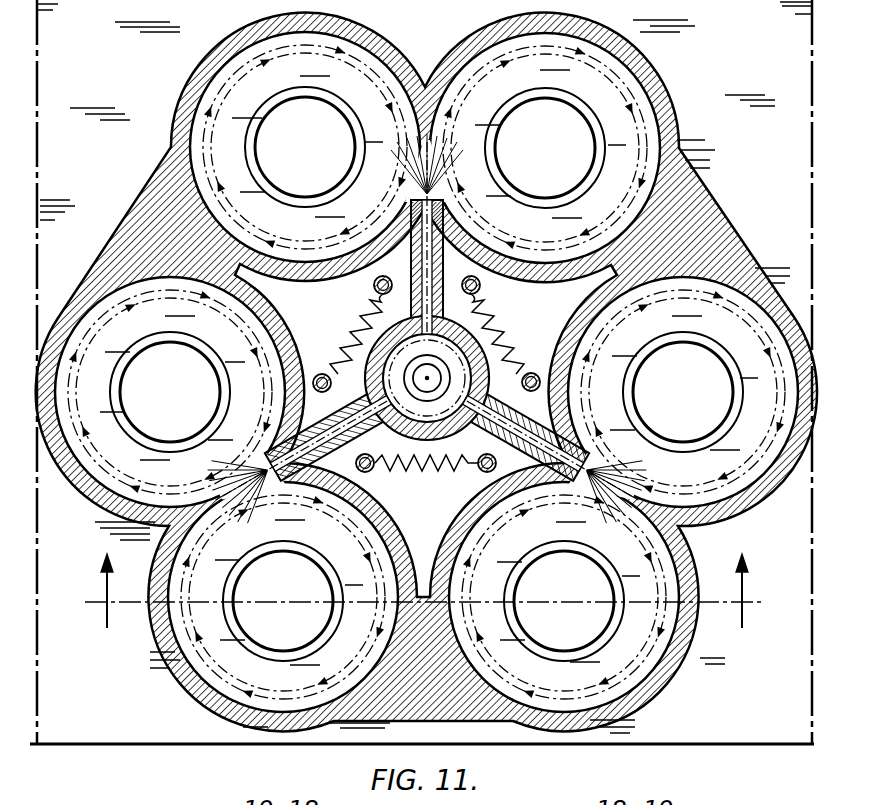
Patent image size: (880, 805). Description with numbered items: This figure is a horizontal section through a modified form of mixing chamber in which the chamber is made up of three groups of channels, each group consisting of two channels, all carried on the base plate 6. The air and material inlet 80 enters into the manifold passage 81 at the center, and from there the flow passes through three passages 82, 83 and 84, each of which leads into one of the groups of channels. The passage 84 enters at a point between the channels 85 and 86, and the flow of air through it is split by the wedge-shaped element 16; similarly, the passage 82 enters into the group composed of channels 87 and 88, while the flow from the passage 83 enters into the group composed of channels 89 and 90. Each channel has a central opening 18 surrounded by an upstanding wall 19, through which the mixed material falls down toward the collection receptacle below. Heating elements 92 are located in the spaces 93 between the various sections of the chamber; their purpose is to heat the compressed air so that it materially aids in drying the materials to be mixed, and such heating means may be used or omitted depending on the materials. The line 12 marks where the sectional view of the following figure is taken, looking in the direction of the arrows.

The base plate 6 is at (426, 372).
The section line 12— 12 is at (425, 606).
The wedge-shaped element 16 is at (430, 135).
The central opening 18 is at (426, 374).
The upstanding wall 19 is at (257, 131).
The air and material inlet 80 is at (427, 390).
The manifold passage 81 is at (448, 426).
The passage 82 is at (296, 422).
The passage 83 is at (427, 222).
The passage 84 is at (570, 426).
The channel 85 is at (732, 291).
The channel 86 is at (660, 686).
The channel 87 is at (203, 670).
The channel 88 is at (96, 470).
The channel 89 is at (384, 70).
The channel 90 is at (648, 103).
The heating element 92 is at (436, 521).
The space 93 is at (330, 329).